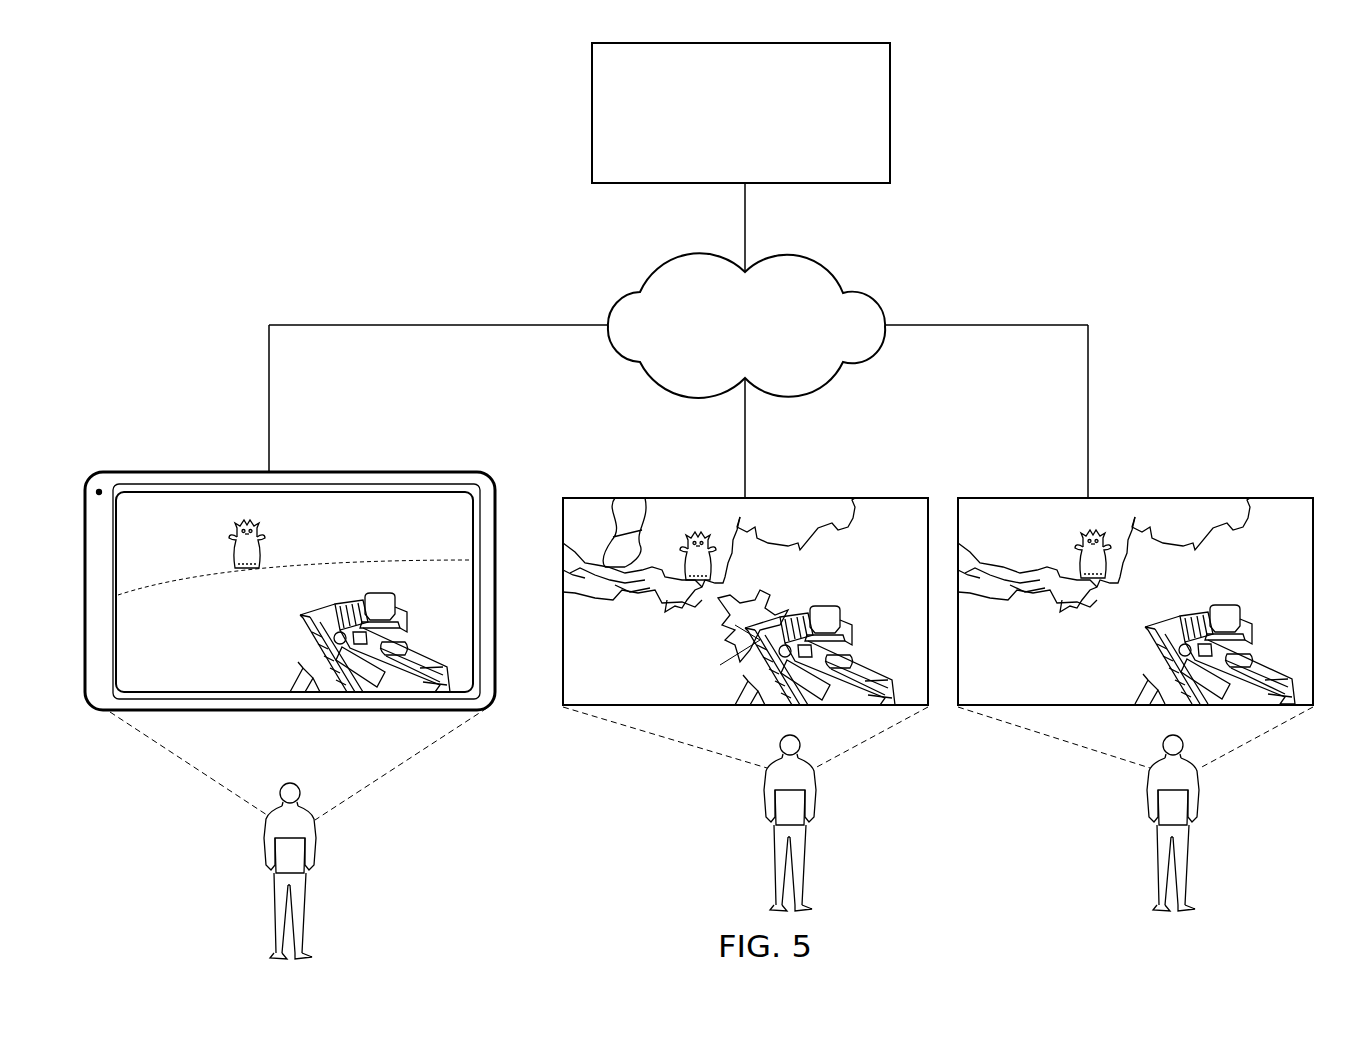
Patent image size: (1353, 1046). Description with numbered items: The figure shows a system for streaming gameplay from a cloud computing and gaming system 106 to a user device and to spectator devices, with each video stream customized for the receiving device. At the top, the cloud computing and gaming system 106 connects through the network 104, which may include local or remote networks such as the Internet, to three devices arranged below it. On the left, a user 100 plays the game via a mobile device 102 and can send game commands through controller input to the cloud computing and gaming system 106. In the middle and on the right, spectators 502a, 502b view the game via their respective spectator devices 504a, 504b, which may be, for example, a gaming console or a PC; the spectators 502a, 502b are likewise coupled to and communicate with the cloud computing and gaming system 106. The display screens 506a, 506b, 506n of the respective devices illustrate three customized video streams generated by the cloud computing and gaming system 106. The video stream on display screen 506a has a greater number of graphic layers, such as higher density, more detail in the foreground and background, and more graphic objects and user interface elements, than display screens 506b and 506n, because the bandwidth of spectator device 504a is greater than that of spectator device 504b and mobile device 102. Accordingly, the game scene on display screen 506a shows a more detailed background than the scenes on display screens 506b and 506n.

The user 100 is at (267, 822).
The mobile device 102 is at (485, 472).
The network 104 is at (617, 298).
The cloud computing and gaming system 106 is at (592, 97).
The spectator 502a is at (767, 770).
The spectator 502b is at (1148, 770).
The spectator device 504a is at (918, 498).
The spectator device 504b is at (1263, 497).
The display screen 506n is at (161, 691).
The display screen 506a is at (609, 693).
The display screen 506b is at (1004, 693).